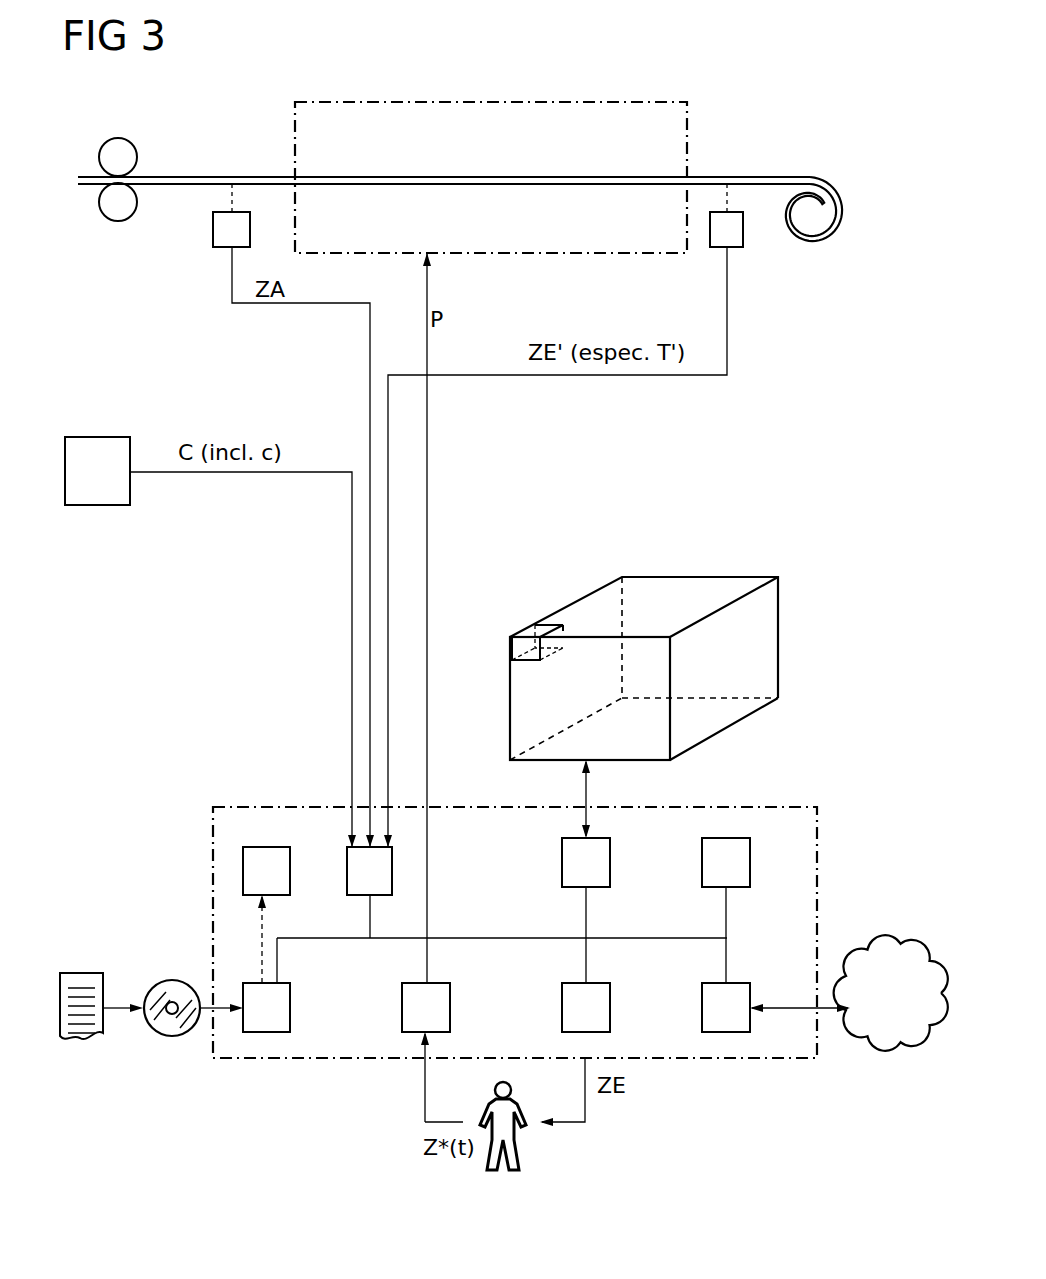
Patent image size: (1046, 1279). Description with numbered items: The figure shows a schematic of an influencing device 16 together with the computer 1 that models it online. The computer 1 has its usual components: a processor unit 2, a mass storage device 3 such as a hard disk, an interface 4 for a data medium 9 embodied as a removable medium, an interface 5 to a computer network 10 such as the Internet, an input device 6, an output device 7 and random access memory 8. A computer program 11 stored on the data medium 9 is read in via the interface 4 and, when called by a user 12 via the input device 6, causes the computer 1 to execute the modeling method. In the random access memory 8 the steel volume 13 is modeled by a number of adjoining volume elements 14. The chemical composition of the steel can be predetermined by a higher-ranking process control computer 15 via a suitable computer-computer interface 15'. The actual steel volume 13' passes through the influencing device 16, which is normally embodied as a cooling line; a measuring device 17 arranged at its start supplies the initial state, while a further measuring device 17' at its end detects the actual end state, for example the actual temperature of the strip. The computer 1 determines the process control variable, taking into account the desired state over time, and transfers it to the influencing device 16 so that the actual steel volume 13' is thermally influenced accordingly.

The computer 1 is at (178, 880).
The processor unit 2 is at (702, 862).
The mass storage device 3 is at (290, 870).
The interface 4 is at (290, 1005).
The interface 5 is at (702, 1007).
The input device 6 is at (450, 1005).
The output device 7 is at (562, 1007).
The random access memory 8 is at (562, 862).
The data medium 9 is at (172, 980).
The computer network 10 is at (883, 1050).
The computer program 11 is at (80, 973).
The user 12 is at (518, 1145).
The steel volume 13 is at (693, 668).
The actual steel volume 13' is at (460, 179).
The volume element 14 is at (512, 642).
The process control computer 15 is at (210, 614).
The computer-computer interface 15' is at (340, 856).
The influencing device 16 is at (530, 84).
The measuring device 17 is at (263, 515).
The further measuring device 17' is at (563, 515).